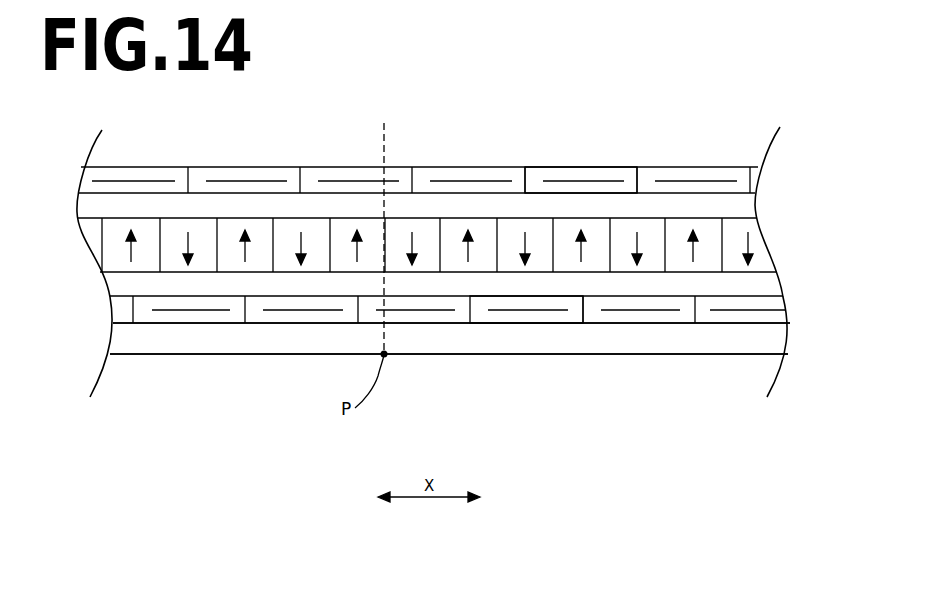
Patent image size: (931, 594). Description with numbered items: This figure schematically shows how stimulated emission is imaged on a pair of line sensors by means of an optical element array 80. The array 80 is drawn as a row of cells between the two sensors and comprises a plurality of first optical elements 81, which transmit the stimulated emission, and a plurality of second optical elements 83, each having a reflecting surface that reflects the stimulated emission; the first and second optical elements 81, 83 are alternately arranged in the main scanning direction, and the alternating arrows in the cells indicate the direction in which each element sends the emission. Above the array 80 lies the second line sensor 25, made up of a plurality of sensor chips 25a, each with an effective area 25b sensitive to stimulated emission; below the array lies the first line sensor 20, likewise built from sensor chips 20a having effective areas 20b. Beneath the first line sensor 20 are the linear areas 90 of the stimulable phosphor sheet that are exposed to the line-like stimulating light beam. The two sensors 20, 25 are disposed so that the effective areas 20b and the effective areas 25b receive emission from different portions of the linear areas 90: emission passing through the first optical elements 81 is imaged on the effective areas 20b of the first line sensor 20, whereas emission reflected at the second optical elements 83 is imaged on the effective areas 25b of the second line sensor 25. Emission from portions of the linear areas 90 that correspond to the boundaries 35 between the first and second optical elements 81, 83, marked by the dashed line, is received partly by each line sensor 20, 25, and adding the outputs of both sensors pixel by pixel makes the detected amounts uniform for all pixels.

The second line sensor 25 is at (638, 138).
The sensor chip 25a is at (548, 167).
The effective areas 25b is at (337, 180).
The optical element array 80 is at (765, 258).
The second optical elements 83 is at (145, 230).
The first optical elements 81 is at (203, 228).
The boundaries 35 is at (387, 237).
The first line sensor 20 is at (682, 324).
The sensor chip 20a is at (555, 324).
The effective areas 20b is at (422, 311).
The linear areas 90 is at (637, 355).